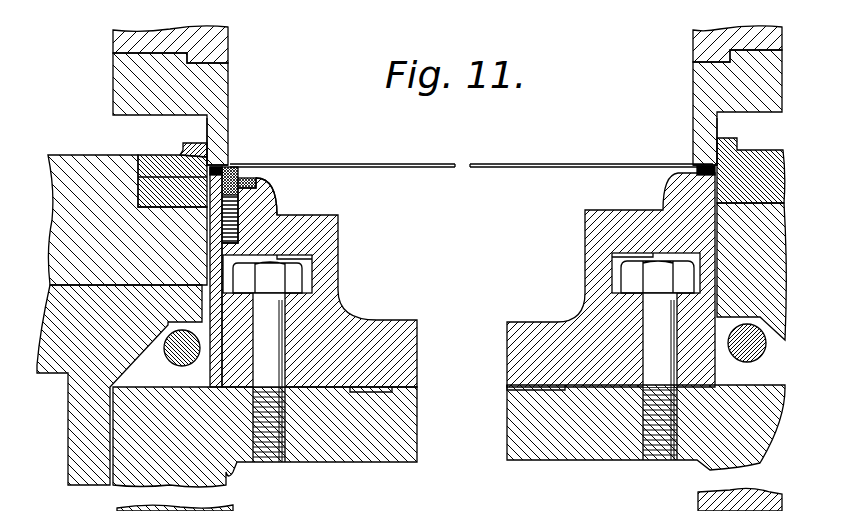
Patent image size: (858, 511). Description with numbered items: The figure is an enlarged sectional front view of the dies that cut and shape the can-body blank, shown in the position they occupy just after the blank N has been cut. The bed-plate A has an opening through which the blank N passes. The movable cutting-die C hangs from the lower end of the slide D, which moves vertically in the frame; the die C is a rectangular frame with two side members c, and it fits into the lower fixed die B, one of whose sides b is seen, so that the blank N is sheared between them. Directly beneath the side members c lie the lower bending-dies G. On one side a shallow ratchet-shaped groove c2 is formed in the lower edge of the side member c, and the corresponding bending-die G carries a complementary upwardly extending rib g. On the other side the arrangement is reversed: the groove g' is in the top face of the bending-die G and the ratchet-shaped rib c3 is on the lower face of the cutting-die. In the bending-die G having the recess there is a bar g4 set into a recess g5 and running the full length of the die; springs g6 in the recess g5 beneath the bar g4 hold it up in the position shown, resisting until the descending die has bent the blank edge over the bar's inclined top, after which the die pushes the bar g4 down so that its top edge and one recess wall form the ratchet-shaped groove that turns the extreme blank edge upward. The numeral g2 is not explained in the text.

The slide D is at (231, 43).
The movable die C is at (231, 132).
The side member of die C c is at (230, 141).
The bed-plate A is at (70, 155).
The ratchet-shaped rib c3 is at (143, 153).
The side of fixed die B b is at (182, 144).
The groove g' is at (118, 185).
The bar g4 is at (234, 164).
The springs g6 is at (241, 182).
The recess g5 is at (263, 200).
The blank N is at (535, 161).
The ratchet-shaped groove c2 is at (706, 161).
The rib g is at (663, 177).
The lower bending-dies G is at (611, 316).
The rod g2 is at (760, 352).